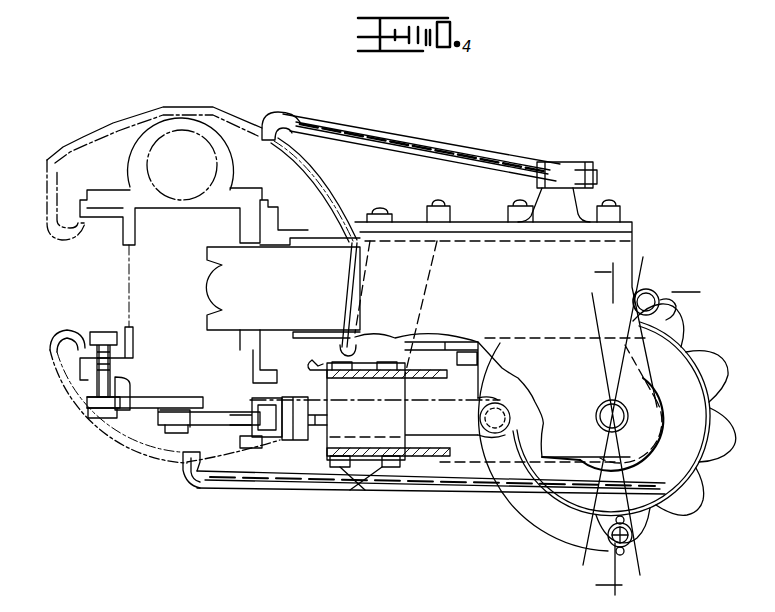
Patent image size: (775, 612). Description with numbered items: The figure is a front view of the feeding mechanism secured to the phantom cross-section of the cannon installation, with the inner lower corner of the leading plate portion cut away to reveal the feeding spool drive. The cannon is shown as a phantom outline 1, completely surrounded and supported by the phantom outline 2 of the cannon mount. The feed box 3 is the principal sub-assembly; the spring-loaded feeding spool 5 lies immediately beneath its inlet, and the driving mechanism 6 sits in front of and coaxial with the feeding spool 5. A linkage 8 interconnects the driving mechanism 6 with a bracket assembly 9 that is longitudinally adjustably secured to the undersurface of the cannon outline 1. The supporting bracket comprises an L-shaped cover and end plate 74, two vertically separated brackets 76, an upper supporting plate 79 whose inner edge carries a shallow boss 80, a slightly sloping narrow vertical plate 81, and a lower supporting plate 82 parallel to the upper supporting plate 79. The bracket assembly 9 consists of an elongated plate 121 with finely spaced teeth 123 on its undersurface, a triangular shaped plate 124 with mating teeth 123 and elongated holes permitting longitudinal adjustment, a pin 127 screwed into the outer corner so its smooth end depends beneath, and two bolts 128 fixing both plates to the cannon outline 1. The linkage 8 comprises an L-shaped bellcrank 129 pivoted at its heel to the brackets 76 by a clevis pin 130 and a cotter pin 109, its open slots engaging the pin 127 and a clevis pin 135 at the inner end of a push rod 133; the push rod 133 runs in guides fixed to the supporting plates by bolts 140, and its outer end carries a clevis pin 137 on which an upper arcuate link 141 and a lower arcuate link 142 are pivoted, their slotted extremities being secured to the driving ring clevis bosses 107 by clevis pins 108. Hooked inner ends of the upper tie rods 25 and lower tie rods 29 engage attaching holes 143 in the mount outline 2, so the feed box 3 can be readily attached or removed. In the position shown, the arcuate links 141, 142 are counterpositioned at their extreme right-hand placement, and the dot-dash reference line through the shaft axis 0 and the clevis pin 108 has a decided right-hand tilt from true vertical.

The center of shaft axis 0 is at (620, 417).
The phantom outline of the cannon 1 is at (233, 183).
The phantom outline of the cannon mount 2 is at (263, 120).
The feed box 3 is at (496, 260).
The feeding spool 5 is at (603, 588).
The driving mechanism 6 is at (728, 472).
The linkage 8 is at (246, 371).
The bracket assembly 9 is at (130, 414).
The tie rods 25 is at (449, 152).
The tie rods 29 is at (301, 480).
The L-shaped cover and end plate 74 is at (352, 330).
The brackets 76 is at (289, 397).
The upper supporting plate 79 is at (423, 378).
The boss 80 is at (318, 370).
The vertical plate 81 is at (330, 327).
The lower supporting plate 82 is at (420, 452).
The clevis boss 107 is at (660, 303).
The clevis pin 108 is at (648, 290).
The cotter pin 109 is at (652, 553).
The elongated plate 121 is at (88, 395).
The teeth 123 is at (132, 392).
The triangular shaped plate 124 is at (197, 397).
The pin 127 is at (180, 426).
The bolts 128 is at (100, 382).
The bellcrank 129 is at (252, 410).
The clevis pin 130 is at (255, 450).
The push rod 133 is at (461, 445).
The clevis pin 135 is at (318, 455).
The clevis pin 137 is at (496, 434).
The bolts 140 is at (360, 488).
The upper arcuate link 141 is at (500, 385).
The lower arcuate link 142 is at (540, 532).
The attaching holes 143 is at (268, 116).